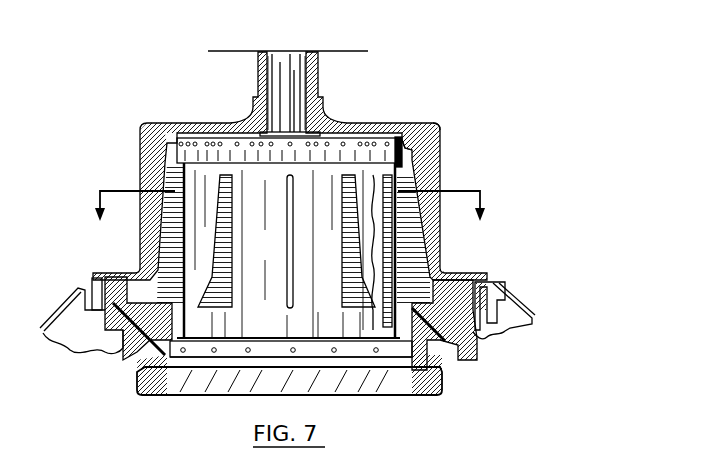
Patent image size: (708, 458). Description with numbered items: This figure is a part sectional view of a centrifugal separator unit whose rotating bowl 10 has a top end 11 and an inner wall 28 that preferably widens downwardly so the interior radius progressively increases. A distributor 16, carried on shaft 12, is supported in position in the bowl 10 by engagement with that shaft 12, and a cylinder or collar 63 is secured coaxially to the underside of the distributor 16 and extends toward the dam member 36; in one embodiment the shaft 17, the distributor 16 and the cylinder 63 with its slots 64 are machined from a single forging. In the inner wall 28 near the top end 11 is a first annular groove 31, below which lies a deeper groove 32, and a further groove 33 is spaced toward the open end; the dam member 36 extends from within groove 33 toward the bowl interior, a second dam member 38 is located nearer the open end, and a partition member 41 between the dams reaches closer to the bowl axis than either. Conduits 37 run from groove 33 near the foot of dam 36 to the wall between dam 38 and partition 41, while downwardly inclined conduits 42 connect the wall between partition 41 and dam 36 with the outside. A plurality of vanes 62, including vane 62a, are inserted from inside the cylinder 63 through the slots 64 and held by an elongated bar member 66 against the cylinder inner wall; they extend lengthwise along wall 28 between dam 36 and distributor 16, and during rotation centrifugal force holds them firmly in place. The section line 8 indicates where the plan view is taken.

The section line 8- 8 is at (290, 216).
The bowl 10 is at (431, 119).
The top end 11 is at (350, 122).
The shaft 12 is at (317, 78).
The distributor 16 is at (375, 150).
The shaft 17 is at (288, 71).
The inner wall 28 is at (406, 167).
The first annular groove 31 is at (433, 125).
The second annular groove 32 is at (413, 148).
The third annular groove 33 is at (493, 286).
The dam member 36 is at (437, 318).
The conduits 37 is at (462, 342).
The second dam member 38 is at (440, 347).
The partition member 41 is at (457, 363).
The conduits 42 is at (462, 355).
The vanes 62 is at (168, 239).
The vane 62a is at (433, 300).
The cylinder 63 is at (363, 328).
The slots 64 is at (291, 247).
The elongated bar member 66 is at (400, 190).